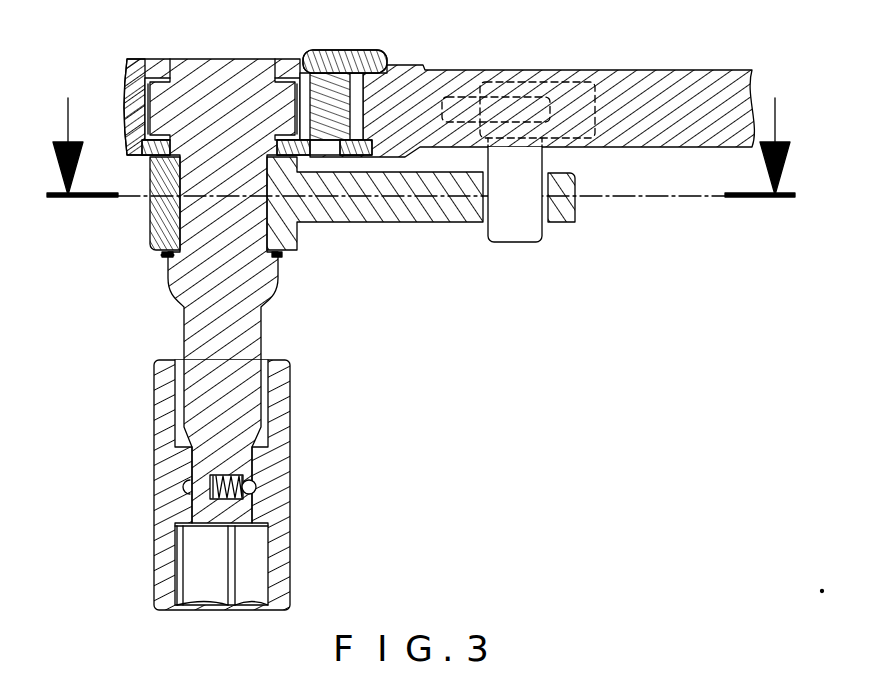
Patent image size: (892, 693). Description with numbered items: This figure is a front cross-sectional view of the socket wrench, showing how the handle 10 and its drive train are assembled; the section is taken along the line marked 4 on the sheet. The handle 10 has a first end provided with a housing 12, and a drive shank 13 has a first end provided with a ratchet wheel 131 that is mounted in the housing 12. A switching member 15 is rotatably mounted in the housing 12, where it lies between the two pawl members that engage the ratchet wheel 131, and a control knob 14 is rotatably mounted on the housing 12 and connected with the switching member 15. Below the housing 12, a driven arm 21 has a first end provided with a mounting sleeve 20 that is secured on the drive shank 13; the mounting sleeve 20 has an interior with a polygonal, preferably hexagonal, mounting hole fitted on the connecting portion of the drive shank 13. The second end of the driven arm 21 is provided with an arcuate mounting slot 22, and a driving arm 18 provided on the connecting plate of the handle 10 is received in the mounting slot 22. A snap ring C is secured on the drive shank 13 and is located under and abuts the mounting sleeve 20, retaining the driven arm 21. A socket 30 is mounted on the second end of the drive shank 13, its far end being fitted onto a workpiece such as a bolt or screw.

The section line 4- 4 is at (423, 147).
The handle 10 is at (700, 82).
The housing 12 is at (132, 97).
The drive shank 13 is at (243, 466).
The control knob 14 is at (334, 63).
The switching member 15 is at (316, 63).
The driving arm 18 is at (510, 228).
The mounting sleeve 20 is at (150, 223).
The driven arm 21 is at (390, 210).
The mounting slot 22 is at (571, 214).
The socket 30 is at (160, 481).
The ratchet wheel 131 is at (293, 110).
The snap ring C is at (163, 257).